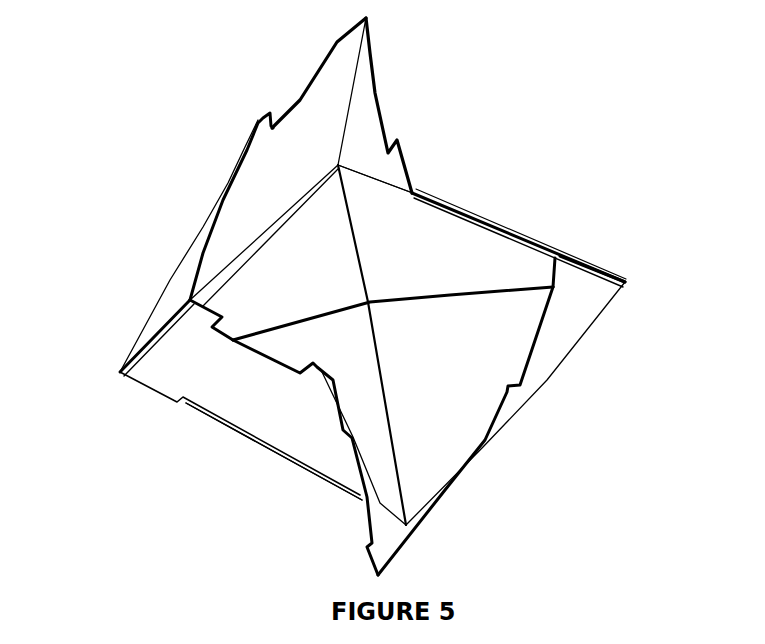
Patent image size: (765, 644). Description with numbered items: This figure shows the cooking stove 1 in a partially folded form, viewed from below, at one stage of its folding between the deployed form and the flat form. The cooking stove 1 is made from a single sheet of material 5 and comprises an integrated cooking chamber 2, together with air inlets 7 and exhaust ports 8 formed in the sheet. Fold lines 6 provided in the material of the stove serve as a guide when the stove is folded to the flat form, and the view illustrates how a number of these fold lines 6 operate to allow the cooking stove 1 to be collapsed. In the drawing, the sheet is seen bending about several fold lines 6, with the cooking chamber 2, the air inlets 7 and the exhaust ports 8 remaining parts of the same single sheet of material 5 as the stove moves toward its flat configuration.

The cooking stove 1 is at (373, 296).
The integrated cooking chamber 2 is at (457, 245).
The single sheet of material 5 is at (602, 301).
The fold lines 6 is at (324, 182).
The air inlets 7 is at (361, 325).
The exhaust ports 8 is at (263, 448).